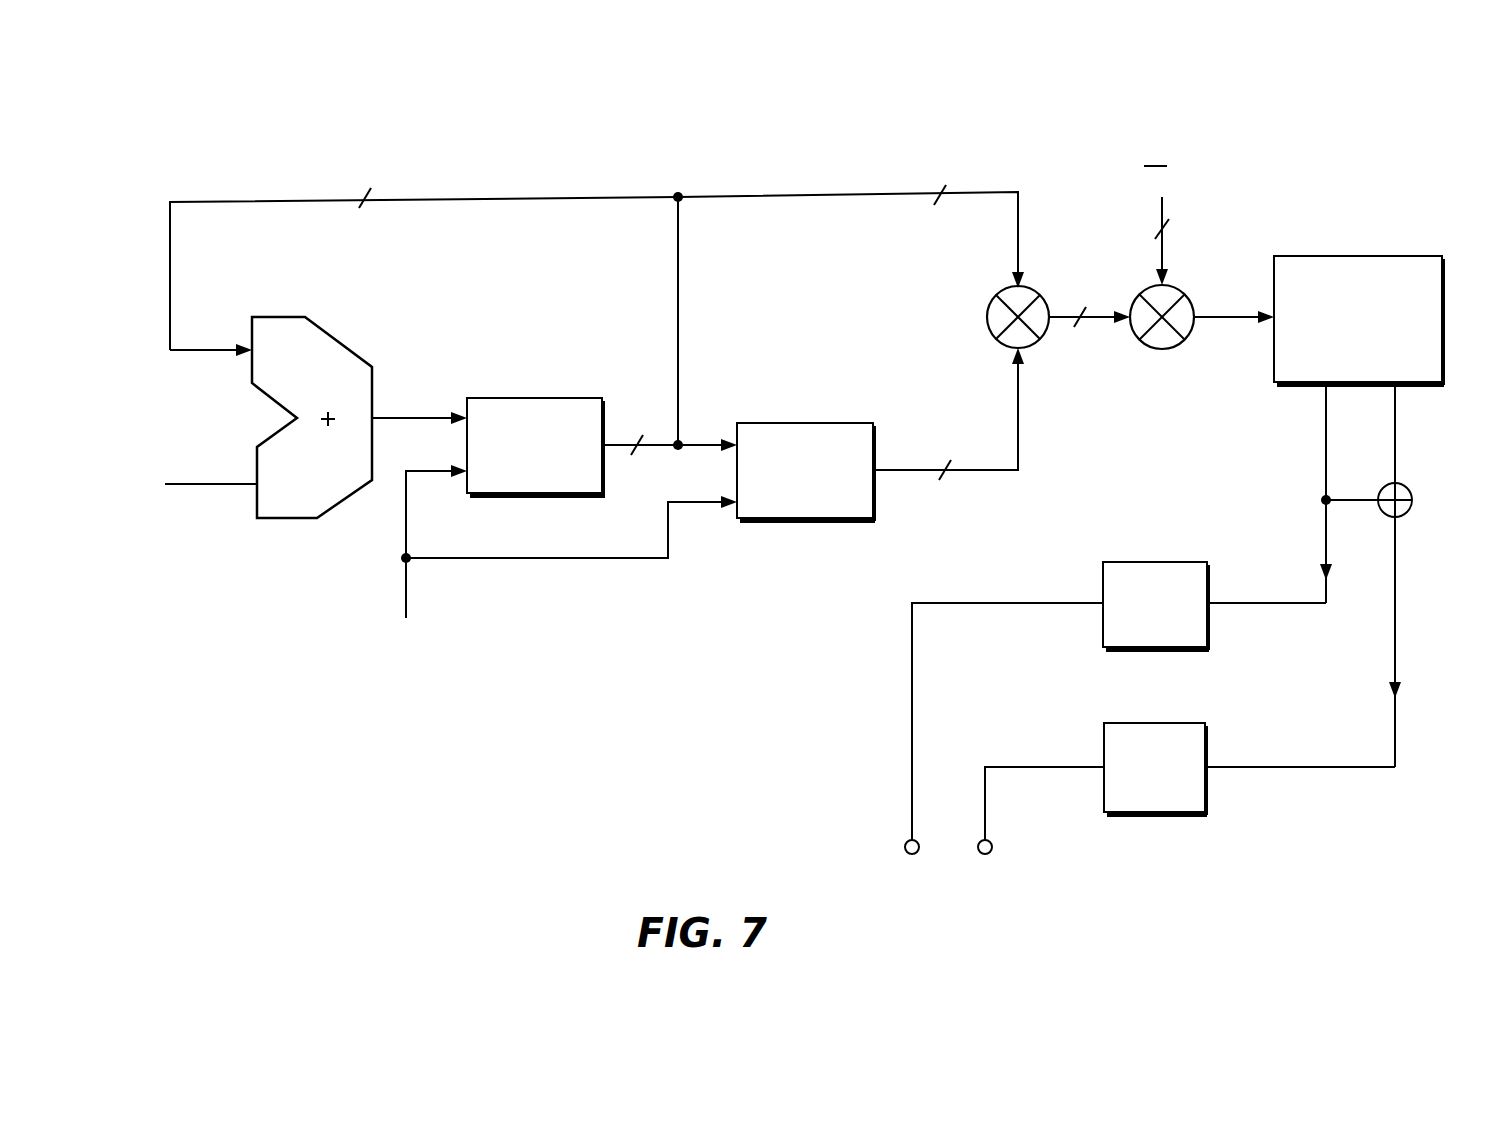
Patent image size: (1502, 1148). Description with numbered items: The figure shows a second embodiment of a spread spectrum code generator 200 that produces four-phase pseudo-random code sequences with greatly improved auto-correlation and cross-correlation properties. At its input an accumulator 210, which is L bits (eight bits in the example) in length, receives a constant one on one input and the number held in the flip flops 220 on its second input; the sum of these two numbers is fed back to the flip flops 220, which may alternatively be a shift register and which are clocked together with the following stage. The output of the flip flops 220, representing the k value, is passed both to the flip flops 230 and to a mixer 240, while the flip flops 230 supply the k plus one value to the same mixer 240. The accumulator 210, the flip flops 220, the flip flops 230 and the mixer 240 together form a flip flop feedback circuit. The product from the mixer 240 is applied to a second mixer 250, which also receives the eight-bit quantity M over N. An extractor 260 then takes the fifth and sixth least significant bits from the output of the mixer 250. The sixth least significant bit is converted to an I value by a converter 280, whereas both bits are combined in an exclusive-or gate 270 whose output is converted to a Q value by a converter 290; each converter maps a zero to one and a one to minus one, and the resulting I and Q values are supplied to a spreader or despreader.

The code generator 200 is at (541, 110).
The accumulator 210 is at (323, 322).
The flip flops 220 is at (487, 398).
The flip flops 230 is at (755, 423).
The mixer 240 is at (1032, 287).
The mixer 250 is at (1193, 302).
The extractor 260 is at (1335, 256).
The exclusive-or gate 270 is at (1405, 486).
The converter 280 is at (1143, 562).
The converter 290 is at (1178, 723).